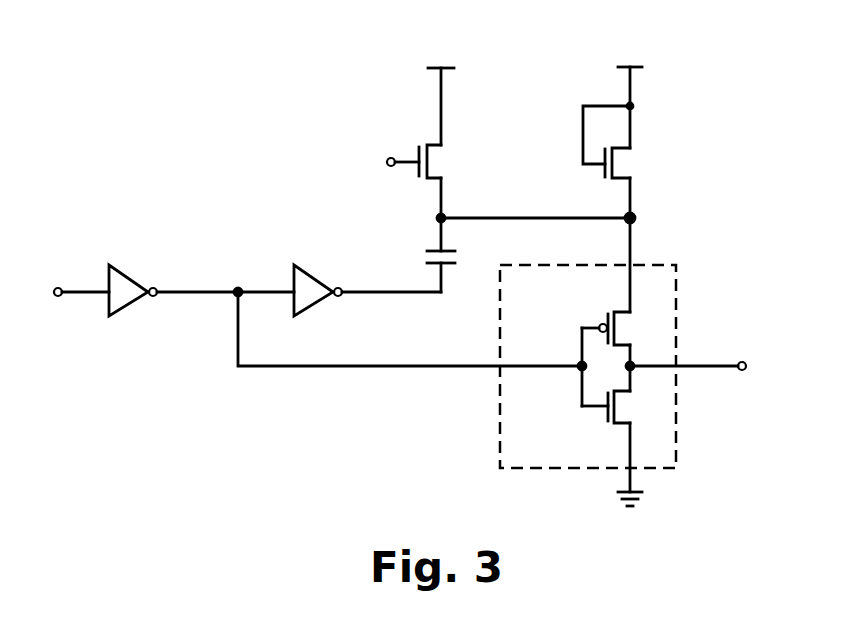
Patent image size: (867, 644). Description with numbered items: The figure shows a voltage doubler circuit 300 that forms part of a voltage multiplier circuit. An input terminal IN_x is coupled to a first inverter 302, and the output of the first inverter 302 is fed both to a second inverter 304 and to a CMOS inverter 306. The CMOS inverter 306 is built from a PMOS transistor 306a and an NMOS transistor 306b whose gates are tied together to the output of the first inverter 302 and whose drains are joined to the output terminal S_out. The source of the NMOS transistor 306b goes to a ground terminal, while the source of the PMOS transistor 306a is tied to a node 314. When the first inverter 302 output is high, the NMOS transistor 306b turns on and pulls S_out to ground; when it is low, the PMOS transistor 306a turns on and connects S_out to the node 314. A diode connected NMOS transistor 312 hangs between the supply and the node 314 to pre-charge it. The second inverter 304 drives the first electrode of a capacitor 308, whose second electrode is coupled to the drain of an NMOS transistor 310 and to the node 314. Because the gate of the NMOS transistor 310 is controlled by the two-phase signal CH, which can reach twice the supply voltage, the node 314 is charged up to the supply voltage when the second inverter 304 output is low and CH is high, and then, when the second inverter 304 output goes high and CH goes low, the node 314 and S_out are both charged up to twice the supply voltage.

The voltage doubler circuit 300 is at (146, 97).
The first inverter 302 is at (119, 309).
The second inverter 304 is at (304, 309).
The CMOS inverter 306 is at (693, 275).
The PMOS transistor 306a is at (586, 295).
The NMOS transistor 306b is at (586, 440).
The capacitor 308 is at (412, 225).
The NMOS transistor 310 is at (460, 172).
The diode connected NMOS transistor 312 is at (645, 138).
The node 314 is at (645, 200).